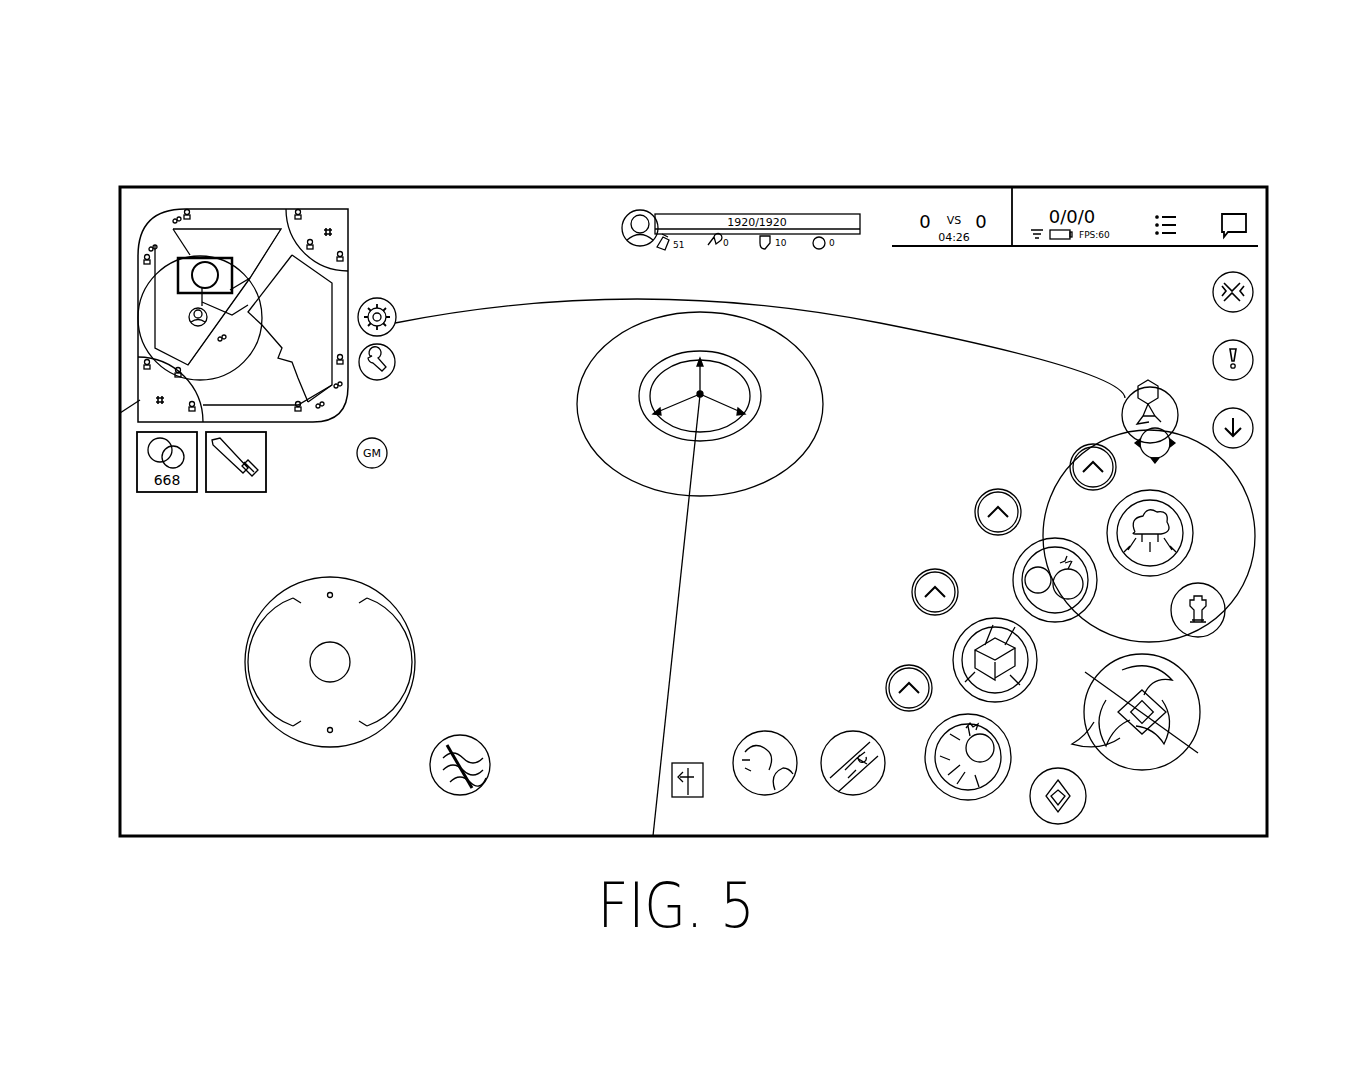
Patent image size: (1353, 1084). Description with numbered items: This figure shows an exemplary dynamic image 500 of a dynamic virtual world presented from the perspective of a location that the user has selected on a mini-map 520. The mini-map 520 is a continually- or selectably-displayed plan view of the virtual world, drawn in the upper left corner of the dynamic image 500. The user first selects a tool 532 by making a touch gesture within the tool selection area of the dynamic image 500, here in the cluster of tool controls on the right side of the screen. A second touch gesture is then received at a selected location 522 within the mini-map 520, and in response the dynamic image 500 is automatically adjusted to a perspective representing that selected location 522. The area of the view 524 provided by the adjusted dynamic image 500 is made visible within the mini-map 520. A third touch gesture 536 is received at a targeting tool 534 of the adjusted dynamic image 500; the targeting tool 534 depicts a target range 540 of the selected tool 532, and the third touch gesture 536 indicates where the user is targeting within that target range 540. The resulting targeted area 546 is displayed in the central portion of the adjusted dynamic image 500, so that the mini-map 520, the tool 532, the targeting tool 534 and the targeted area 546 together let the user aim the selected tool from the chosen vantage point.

The dynamic image 500 is at (1306, 140).
The mini-map 520 is at (140, 268).
The selected location 522 is at (205, 256).
The area of the view 524 is at (253, 320).
The tool 532 is at (1193, 520).
The targeting tool 534 is at (1250, 580).
The third touch gesture 536 is at (1170, 455).
The target range 540 is at (1240, 612).
The targeted area 546 is at (752, 487).